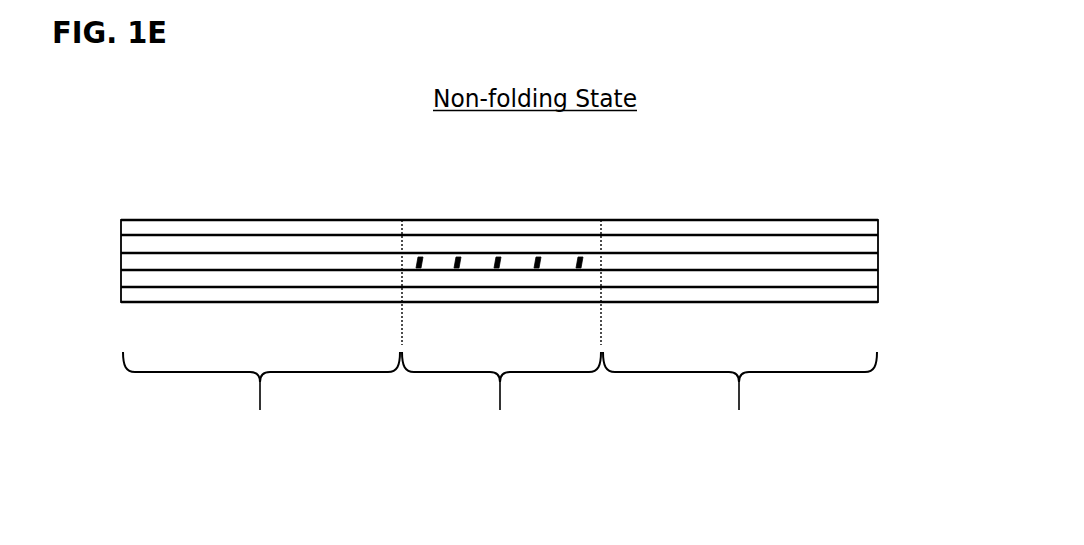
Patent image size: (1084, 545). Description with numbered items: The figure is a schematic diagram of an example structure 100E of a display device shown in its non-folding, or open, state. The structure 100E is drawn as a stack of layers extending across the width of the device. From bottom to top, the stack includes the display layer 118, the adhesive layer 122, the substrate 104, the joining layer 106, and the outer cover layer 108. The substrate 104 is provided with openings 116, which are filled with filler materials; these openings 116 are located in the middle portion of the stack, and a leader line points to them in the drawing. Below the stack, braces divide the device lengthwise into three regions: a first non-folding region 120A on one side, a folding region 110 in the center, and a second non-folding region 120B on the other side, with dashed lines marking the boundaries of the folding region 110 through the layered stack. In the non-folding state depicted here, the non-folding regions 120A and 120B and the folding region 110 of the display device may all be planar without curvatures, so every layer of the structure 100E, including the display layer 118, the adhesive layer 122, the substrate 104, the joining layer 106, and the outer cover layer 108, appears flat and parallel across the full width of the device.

The example structure 100E is at (842, 108).
The substrate 104 is at (851, 262).
The joining layer 106 is at (160, 246).
The outer cover layer 108 is at (850, 228).
The folding region 110 is at (501, 338).
The openings 116 is at (500, 262).
The display layer 118 is at (855, 298).
The non-folding region 120A is at (261, 404).
The non-folding region 120B is at (740, 404).
The adhesive layer 122 is at (160, 278).